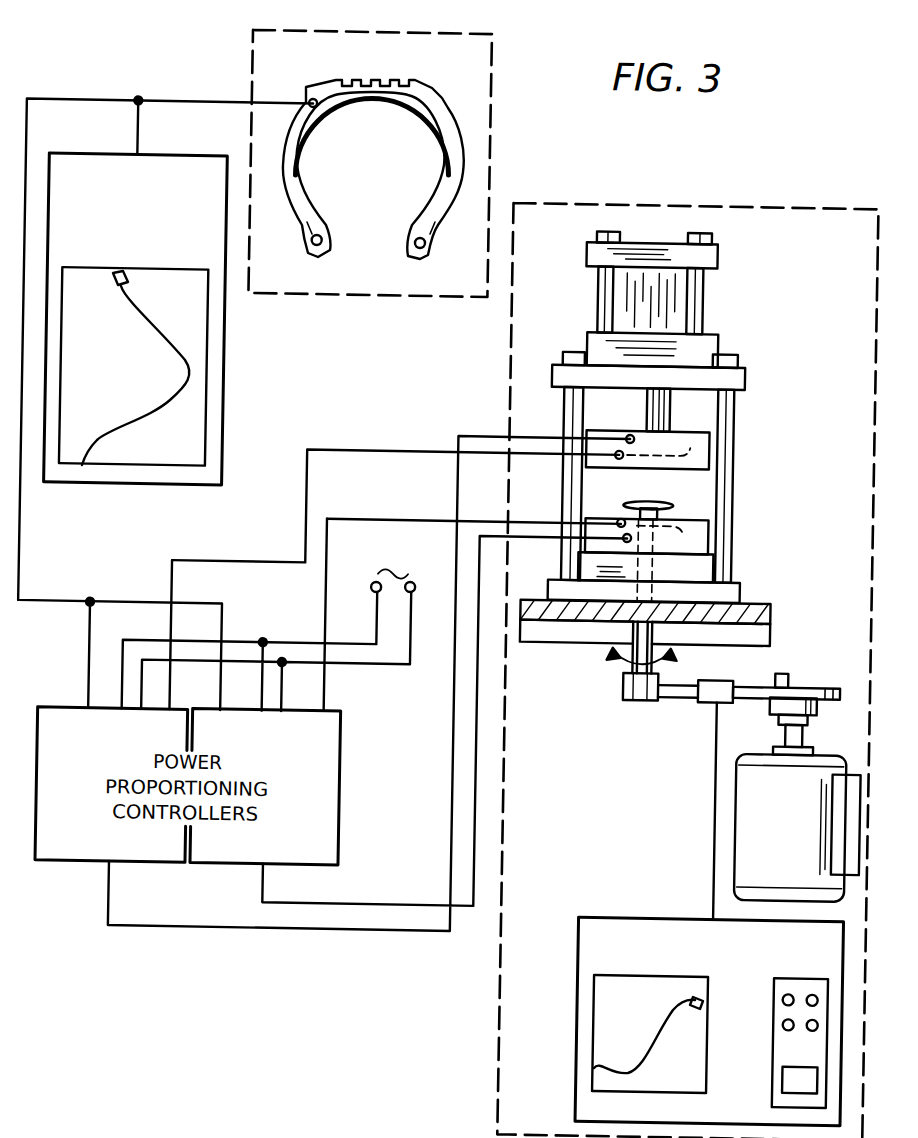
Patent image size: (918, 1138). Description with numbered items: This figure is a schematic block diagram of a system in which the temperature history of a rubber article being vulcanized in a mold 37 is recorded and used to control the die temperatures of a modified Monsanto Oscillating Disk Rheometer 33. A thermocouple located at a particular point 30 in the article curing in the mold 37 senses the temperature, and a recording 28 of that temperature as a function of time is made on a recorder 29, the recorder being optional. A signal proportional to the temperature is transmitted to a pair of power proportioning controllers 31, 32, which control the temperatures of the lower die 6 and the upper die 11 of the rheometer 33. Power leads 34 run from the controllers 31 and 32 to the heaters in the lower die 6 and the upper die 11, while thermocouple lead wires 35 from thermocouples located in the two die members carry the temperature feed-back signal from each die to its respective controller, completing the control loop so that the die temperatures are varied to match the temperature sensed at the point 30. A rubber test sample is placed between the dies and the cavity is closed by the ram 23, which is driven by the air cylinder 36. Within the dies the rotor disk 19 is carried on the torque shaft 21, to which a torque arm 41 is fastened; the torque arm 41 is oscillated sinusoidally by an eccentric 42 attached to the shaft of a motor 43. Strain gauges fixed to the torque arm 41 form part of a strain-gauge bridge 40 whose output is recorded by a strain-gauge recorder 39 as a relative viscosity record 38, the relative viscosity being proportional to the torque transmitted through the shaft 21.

The lower die 6 is at (709, 523).
The upper die 11 is at (693, 438).
The rotor disk 19 is at (656, 489).
The torque shaft 21 is at (649, 619).
The ram 23 is at (652, 392).
The recording 28 is at (187, 367).
The recorder 29 is at (230, 414).
The point 30 is at (315, 93).
The power proportioning controller 31 is at (80, 716).
The power proportioning controller 32 is at (331, 760).
The modified Monsanto Oscillating Disk Rheometer 33 is at (561, 210).
The power leads 34 is at (373, 924).
The thermocouple lead wires 35 is at (393, 442).
The air cylinder 36 is at (675, 288).
The mold 37 is at (471, 70).
The relative viscosity record 38 is at (648, 1047).
The strain-gauge recorder 39 is at (658, 904).
The strain-gauge bridge 40 is at (720, 690).
The torque arm 41 is at (825, 671).
The eccentric 42 is at (829, 693).
The motor 43 is at (812, 818).